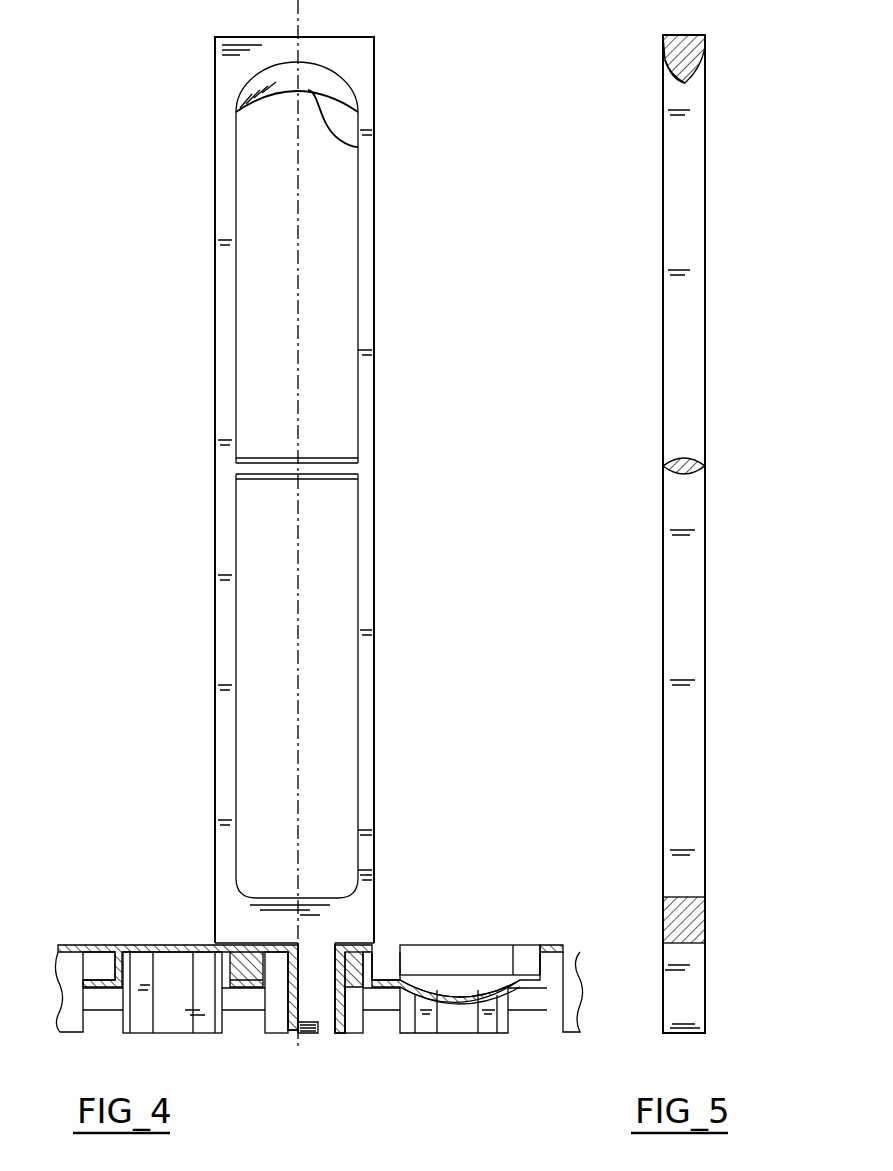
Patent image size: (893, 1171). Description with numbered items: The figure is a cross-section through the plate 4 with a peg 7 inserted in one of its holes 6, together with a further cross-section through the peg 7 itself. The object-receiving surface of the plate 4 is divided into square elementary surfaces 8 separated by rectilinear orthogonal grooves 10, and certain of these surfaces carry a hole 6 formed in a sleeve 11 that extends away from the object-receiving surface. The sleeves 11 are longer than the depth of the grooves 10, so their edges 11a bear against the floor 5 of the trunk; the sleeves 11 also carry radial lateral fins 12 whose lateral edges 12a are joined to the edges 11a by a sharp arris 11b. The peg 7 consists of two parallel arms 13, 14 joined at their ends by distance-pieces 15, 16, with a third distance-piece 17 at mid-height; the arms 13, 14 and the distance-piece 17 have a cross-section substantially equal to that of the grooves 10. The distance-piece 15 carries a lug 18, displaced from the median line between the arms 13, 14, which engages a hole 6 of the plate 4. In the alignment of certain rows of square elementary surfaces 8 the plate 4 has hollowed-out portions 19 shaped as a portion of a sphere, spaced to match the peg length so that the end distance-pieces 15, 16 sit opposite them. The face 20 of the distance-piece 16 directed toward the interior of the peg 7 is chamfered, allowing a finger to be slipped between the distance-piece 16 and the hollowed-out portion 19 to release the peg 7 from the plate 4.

In FIG. 4, the plate 4 is at (130, 935).
In FIG. 4, the floor 5 is at (298, 1050).
In FIG. 4, the hole 6 is at (290, 1035).
In FIG. 4, the peg 7 is at (378, 545).
In FIG. 5, the peg 7 is at (708, 602).
In FIG. 4, the square elementary surface 8 is at (350, 943).
In FIG. 4, the groove 10 is at (100, 945).
In FIG. 4, the sleeve 11 is at (355, 1035).
In FIG. 4, the edge 11a is at (303, 1033).
In FIG. 4, the sharp arris 11b is at (370, 1033).
In FIG. 4, the radial lateral fin 12 is at (277, 993).
In FIG. 4, the lateral edge 12a is at (407, 987).
In FIG. 4, the arm 13 is at (216, 312).
In FIG. 4, the arm 14 is at (374, 312).
In FIG. 4, the distance-piece 15 is at (372, 893).
In FIG. 5, the distance-piece 15 is at (706, 908).
In FIG. 4, the distance-piece 16 is at (357, 62).
In FIG. 5, the distance-piece 16 is at (697, 52).
In FIG. 4, the distance-piece 17 is at (328, 466).
In FIG. 5, the distance-piece 17 is at (700, 468).
In FIG. 4, the lug 18 is at (314, 1035).
In FIG. 5, the lug 18 is at (690, 1010).
In FIG. 4, the hollowed-out portion 19 is at (458, 997).
In FIG. 4, the face 20 is at (362, 147).
In FIG. 5, the face 20 is at (683, 85).